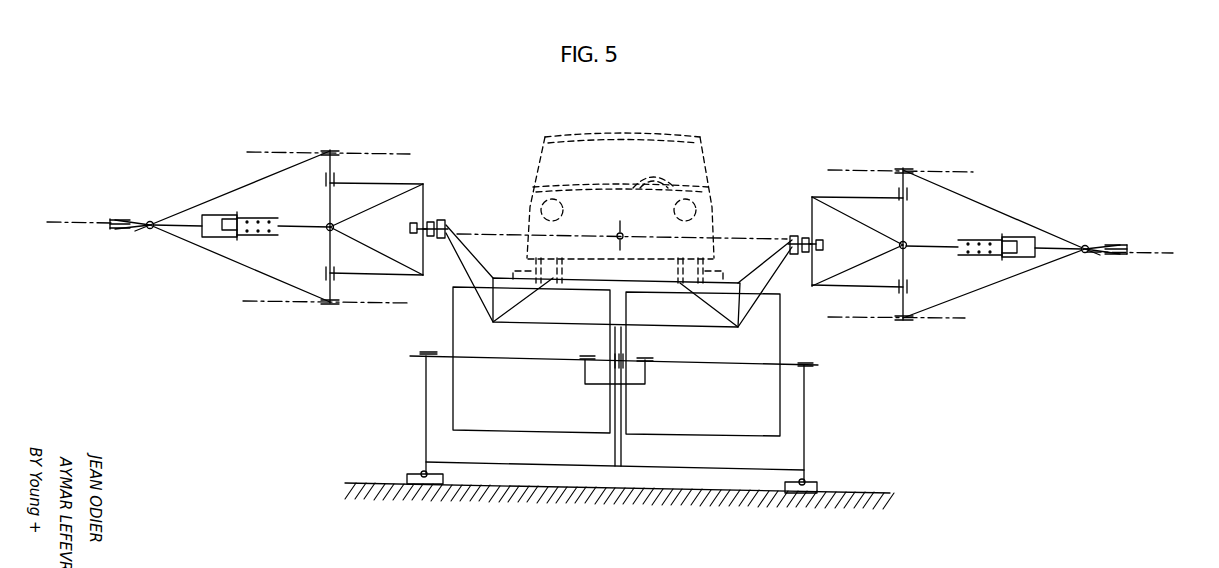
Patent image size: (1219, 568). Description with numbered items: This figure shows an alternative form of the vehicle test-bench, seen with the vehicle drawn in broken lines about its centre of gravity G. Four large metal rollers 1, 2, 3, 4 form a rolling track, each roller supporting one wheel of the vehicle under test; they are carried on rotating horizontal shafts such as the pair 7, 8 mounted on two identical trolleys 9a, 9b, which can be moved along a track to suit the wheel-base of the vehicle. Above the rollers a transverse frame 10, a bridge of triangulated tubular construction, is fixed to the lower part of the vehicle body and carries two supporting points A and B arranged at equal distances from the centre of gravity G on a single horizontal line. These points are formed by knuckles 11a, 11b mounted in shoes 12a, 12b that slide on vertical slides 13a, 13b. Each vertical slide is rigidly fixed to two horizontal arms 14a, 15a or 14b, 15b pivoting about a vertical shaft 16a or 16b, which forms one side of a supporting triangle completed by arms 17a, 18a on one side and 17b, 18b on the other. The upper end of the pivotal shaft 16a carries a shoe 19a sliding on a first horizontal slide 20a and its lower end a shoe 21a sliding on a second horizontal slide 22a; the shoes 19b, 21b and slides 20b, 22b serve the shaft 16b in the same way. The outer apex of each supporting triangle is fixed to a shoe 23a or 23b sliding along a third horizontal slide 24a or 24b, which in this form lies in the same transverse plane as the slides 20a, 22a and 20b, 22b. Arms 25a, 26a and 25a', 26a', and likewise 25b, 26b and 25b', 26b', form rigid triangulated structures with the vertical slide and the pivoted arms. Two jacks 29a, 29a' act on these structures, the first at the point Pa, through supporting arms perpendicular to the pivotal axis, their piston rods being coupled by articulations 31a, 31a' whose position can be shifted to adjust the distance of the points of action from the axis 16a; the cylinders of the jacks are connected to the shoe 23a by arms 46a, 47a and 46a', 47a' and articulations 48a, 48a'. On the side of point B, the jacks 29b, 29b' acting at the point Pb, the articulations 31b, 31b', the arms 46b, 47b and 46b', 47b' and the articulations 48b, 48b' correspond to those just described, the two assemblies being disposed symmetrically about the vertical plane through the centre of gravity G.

The metal roller 1 is at (422, 472).
The metal roller 2 is at (805, 480).
The metal roller 3 is at (453, 334).
The metal roller 4 is at (757, 352).
The rotating horizontal shaft 7 is at (412, 358).
The rotating horizontal shaft 8 is at (818, 368).
The trolley 9a is at (615, 454).
The trolley 9b is at (645, 466).
The transverse frame 10 is at (503, 278).
The knuckle 11a is at (452, 211).
The knuckle 11b is at (776, 222).
The shoe 12a is at (435, 240).
The shoe 12b is at (805, 250).
The vertical slide 13a is at (427, 196).
The vertical slide 13b is at (810, 201).
The horizontal arm 14a is at (421, 184).
The horizontal arm 14b is at (812, 198).
The horizontal arm 15a is at (423, 278).
The horizontal arm 15b is at (812, 288).
The pivotal shaft 16a is at (328, 201).
The pivotal shaft 16b is at (905, 218).
The arm of supporting triangle 17a is at (163, 202).
The arm of supporting triangle 17b is at (1060, 224).
The arm of supporting triangle 18a is at (240, 267).
The arm of supporting triangle 18b is at (1012, 288).
The shoe 19a is at (332, 150).
The shoe 19b is at (900, 168).
The first horizontal slide 20a is at (258, 152).
The first horizontal slide 20b is at (953, 172).
The shoe 21a is at (332, 306).
The shoe 21b is at (900, 322).
The second horizontal slide 22a is at (251, 303).
The second horizontal slide 22b is at (943, 319).
The shoe 23a is at (118, 219).
The shoe 23b is at (1125, 247).
The third horizontal slide 24a is at (50, 222).
The third horizontal slide 24b is at (1163, 251).
The supporting arm 25a is at (377, 192).
The supporting arm 25a' is at (376, 205).
The supporting arm 25b is at (861, 208).
The supporting arm 25b' is at (857, 221).
The arm 26a is at (377, 267).
The arm 26a' is at (376, 251).
The arm 26b is at (861, 279).
The arm 26b' is at (857, 265).
The jack 29a is at (238, 185).
The jack 29a' is at (240, 188).
The jack 29b is at (995, 199).
The jack 29b' is at (994, 209).
The articulation 31a is at (247, 238).
The articulation 31a' is at (241, 226).
The articulation 31b is at (994, 257).
The articulation 31b' is at (994, 247).
The arm 46a is at (173, 270).
The arm 46a' is at (142, 228).
The arm 46b is at (1076, 294).
The arm 46b' is at (1092, 252).
The arm 47a is at (123, 252).
The arm 47a' is at (132, 224).
The arm 47b is at (1101, 275).
The arm 47b' is at (1102, 249).
The articulation 48a is at (88, 197).
The articulation 48a' is at (120, 224).
The articulation 48b is at (1138, 212).
The articulation 48b' is at (1116, 249).
The supporting point A is at (433, 220).
The supporting point B is at (800, 230).
The centre of gravity G is at (629, 230).
The point of action of jack Pa is at (241, 226).
The point of action of jack Pb is at (994, 247).